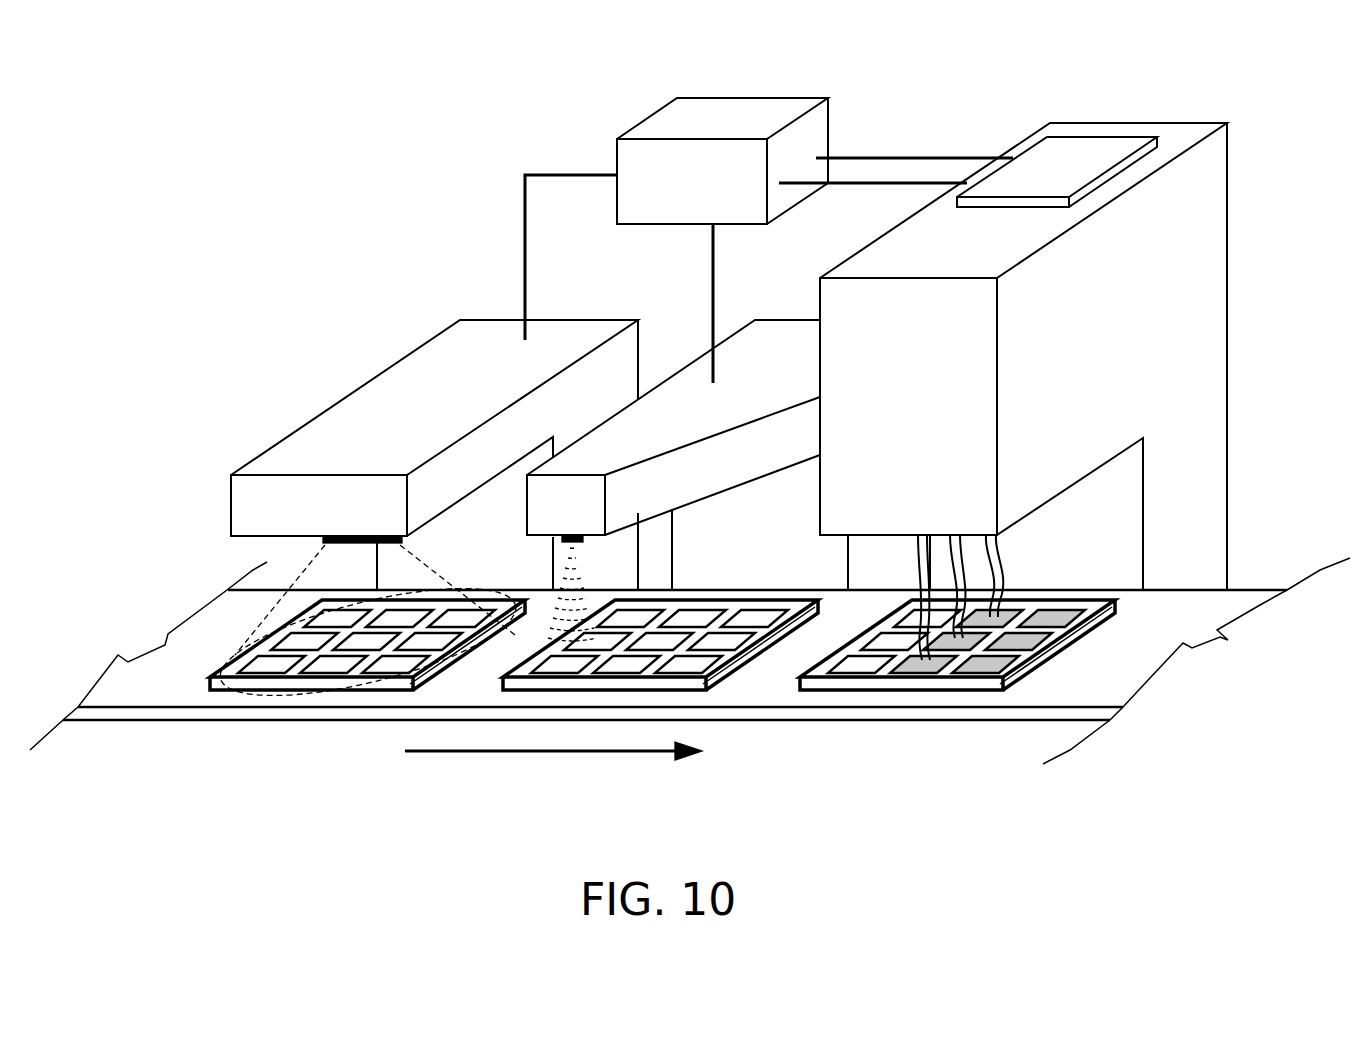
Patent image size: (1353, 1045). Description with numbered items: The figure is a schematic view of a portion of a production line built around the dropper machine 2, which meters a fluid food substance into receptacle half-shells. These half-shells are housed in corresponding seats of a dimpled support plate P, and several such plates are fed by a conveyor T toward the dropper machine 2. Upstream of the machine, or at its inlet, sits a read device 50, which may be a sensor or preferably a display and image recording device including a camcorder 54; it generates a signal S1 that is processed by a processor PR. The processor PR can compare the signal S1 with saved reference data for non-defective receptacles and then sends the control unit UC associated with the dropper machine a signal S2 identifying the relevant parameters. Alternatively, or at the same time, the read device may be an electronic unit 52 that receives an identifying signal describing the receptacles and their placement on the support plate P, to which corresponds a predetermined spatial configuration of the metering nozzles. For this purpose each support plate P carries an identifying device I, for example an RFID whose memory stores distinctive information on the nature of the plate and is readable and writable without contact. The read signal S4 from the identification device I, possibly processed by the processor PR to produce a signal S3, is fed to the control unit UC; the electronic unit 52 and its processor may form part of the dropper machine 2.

The dropper machine 2 is at (1192, 318).
The read device 50 is at (345, 422).
The electronic unit 52 is at (777, 360).
The camcorder 54 is at (315, 560).
The processor PR is at (660, 123).
The control unit UC is at (1072, 163).
The signal S1 is at (523, 250).
The signal S2 is at (912, 157).
The signal S3 is at (872, 185).
The read signal S4 is at (712, 283).
The conveyor T is at (228, 712).
The identifying device I is at (575, 640).
The support plate P is at (938, 690).